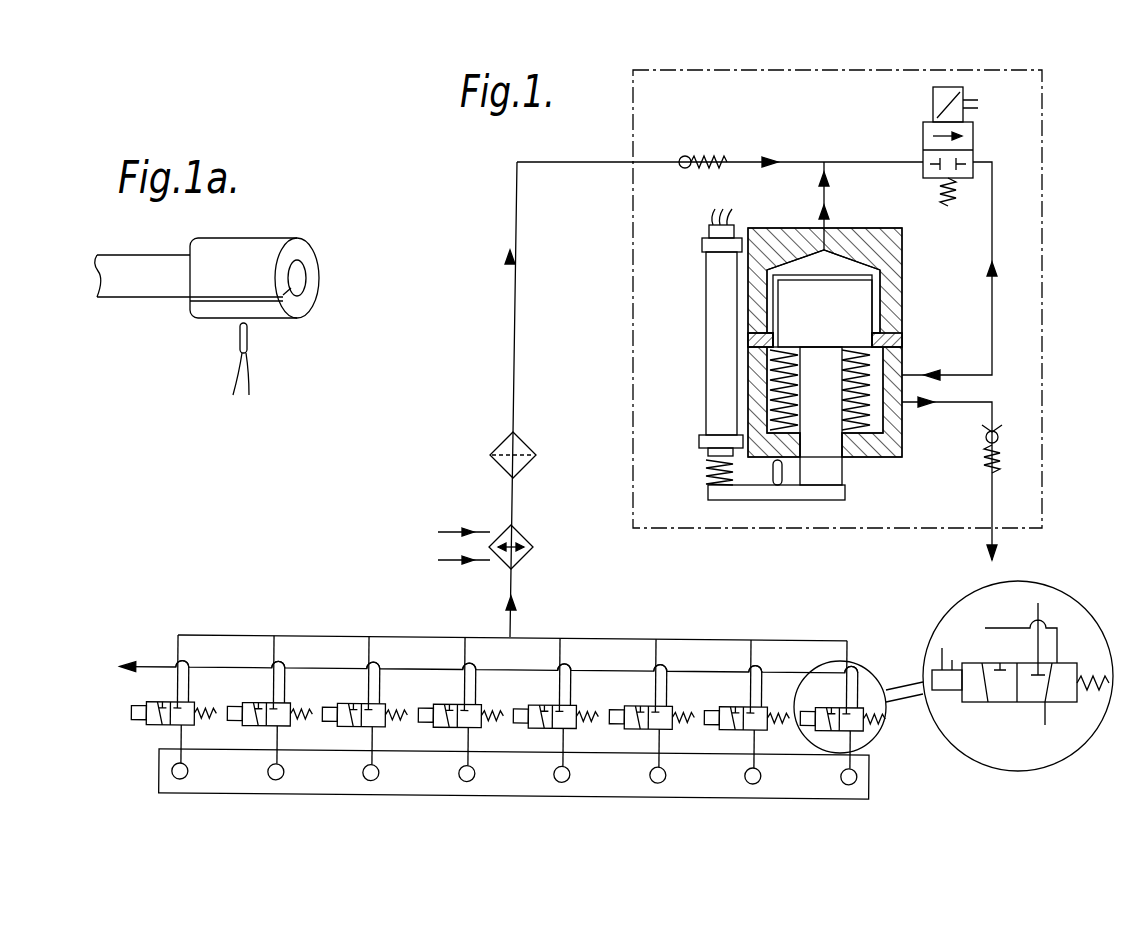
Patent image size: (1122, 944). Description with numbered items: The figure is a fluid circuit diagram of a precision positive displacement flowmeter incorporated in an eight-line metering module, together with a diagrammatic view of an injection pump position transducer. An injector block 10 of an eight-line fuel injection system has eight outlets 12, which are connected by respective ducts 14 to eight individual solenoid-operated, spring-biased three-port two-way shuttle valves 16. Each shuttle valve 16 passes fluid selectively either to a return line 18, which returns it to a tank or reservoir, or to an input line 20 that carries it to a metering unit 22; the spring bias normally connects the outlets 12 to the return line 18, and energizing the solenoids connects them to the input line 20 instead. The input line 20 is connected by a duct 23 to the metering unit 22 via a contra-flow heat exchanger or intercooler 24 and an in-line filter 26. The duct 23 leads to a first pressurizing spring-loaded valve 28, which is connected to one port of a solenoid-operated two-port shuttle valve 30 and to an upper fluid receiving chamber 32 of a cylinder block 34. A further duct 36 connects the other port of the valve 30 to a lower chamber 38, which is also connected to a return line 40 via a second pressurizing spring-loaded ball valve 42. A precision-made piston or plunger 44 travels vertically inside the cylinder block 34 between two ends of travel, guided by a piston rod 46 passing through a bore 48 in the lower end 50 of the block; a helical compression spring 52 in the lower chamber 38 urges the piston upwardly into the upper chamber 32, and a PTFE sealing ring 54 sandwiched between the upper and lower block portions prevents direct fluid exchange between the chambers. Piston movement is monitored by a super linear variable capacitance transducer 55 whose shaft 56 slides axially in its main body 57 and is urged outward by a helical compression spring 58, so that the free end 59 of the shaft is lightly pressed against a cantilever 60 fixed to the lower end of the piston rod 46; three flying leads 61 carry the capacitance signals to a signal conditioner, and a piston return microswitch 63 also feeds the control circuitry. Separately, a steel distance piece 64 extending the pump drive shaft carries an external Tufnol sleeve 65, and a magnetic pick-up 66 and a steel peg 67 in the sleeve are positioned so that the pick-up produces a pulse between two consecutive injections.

In FIG. 1, the injector block 10 is at (870, 792).
In FIG. 1, the outlets 12 is at (272, 780).
In FIG. 1, the ducts 14 is at (270, 742).
In FIG. 1, the shuttle valves 16 is at (364, 670).
In FIG. 1, the return line 18 is at (152, 666).
In FIG. 1, the input line 20 is at (592, 635).
In FIG. 1, the metering unit 22 is at (633, 312).
In FIG. 1, the duct 23 is at (514, 372).
In FIG. 1, the contra-flow heat exchanger or intercooler 24 is at (522, 536).
In FIG. 1, the in-line filter 26 is at (490, 456).
In FIG. 1, the first pressurizing spring-loaded valve 28 is at (688, 160).
In FIG. 1, the solenoid-operated two-port shuttle valve 30 is at (973, 150).
In FIG. 1, the upper fluid receiving chamber 32 is at (828, 250).
In FIG. 1, the cylinder block 34 is at (888, 290).
In FIG. 1, the further duct 36 is at (992, 290).
In FIG. 1, the lower chamber 38 is at (880, 422).
In FIG. 1, the return line 40 is at (987, 542).
In FIG. 1, the second pressurizing spring-loaded ball valve 42 is at (985, 472).
In FIG. 1, the piston or plunger 44 is at (878, 312).
In FIG. 1, the piston rod 46 is at (843, 482).
In FIG. 1, the bore 48 is at (866, 476).
In FIG. 1, the lower end 50 is at (870, 457).
In FIG. 1, the helical compression spring 52 is at (858, 375).
In FIG. 1, the PTFE sealing ring 54 is at (875, 346).
In FIG. 1, the super linear variable capacitance transducer 55 is at (706, 338).
In FIG. 1, the shaft 56 is at (712, 452).
In FIG. 1, the main body 57 is at (706, 394).
In FIG. 1, the helical compression spring 58 is at (736, 470).
In FIG. 1, the free end 59 is at (710, 480).
In FIG. 1, the cantilever 60 is at (781, 504).
In FIG. 1, the flying leads 61 is at (732, 217).
In FIG. 1, the piston return microswitch 63 is at (772, 472).
In FIG. 1A, the steel distance piece 64 is at (137, 283).
In FIG. 1A, the Tufnol sleeve 65 is at (253, 250).
In FIG. 1A, the magnetic pick-up 66 is at (248, 340).
In FIG. 1A, the steel peg 67 is at (310, 303).